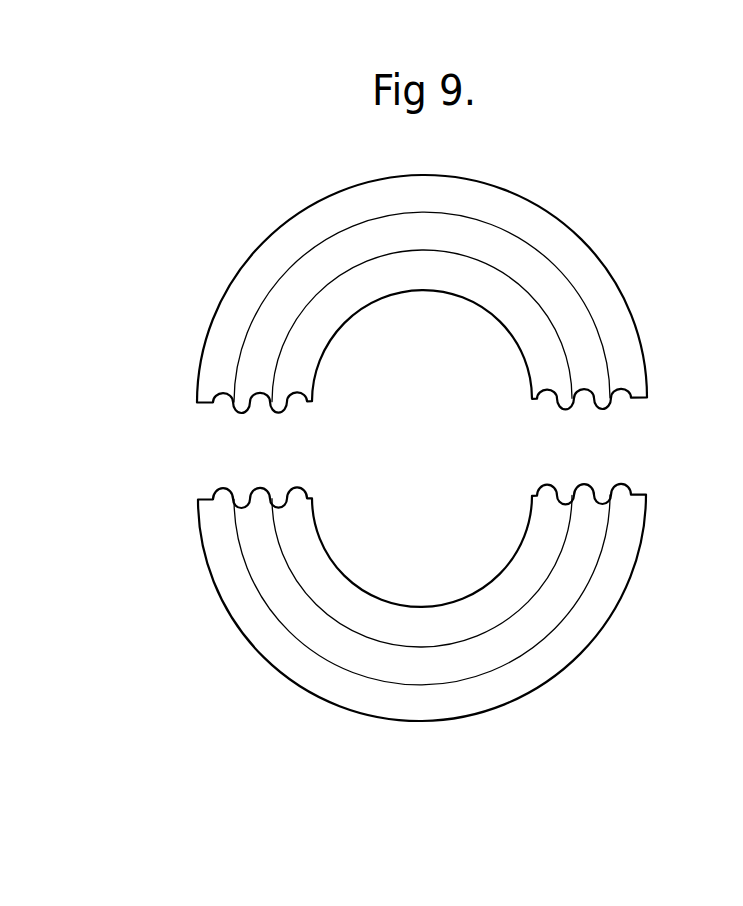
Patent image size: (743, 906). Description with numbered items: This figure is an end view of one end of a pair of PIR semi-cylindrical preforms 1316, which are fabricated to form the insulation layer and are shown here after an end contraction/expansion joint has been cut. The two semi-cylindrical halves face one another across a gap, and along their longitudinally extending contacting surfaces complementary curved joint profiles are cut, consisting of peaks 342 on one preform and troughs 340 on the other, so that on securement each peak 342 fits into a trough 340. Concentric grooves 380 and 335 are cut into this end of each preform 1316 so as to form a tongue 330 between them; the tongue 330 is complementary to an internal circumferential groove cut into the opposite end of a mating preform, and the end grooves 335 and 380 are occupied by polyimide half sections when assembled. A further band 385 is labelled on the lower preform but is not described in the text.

The PIR semi-cylindrical preform 1316 is at (512, 186).
The end circumferential groove 335 is at (565, 250).
The tongue 330 is at (587, 370).
The end circumferential groove 380 is at (330, 308).
The ring band 385 is at (393, 675).
The peak 342 is at (240, 419).
The trough 340 is at (247, 489).